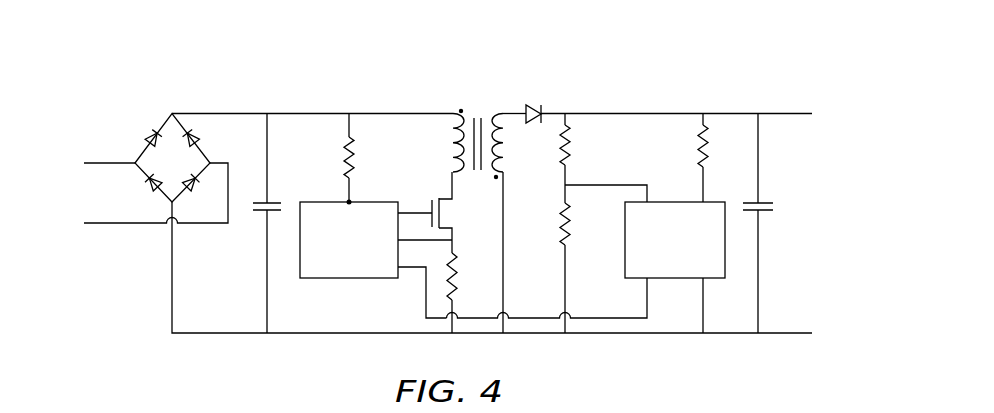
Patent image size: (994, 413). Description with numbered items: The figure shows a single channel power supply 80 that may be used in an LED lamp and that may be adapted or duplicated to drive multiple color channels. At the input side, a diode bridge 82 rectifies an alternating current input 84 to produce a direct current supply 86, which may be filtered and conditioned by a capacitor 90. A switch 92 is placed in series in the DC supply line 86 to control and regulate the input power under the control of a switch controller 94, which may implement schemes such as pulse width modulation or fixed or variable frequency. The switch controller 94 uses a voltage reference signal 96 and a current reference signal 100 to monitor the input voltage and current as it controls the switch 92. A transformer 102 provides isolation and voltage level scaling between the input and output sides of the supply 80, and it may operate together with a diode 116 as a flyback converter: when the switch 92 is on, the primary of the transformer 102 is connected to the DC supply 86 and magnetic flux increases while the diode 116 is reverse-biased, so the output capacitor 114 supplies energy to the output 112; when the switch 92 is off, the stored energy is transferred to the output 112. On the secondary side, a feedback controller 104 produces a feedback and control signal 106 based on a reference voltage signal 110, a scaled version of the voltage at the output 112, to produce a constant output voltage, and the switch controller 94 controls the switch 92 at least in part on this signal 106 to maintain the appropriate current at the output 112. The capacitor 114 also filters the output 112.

The single channel power supply 80 is at (691, 59).
The diode bridge 82 is at (165, 127).
The alternating current (AC) input 84 is at (99, 134).
The direct current (DC) supply 86 is at (306, 113).
The capacitor 90 is at (277, 198).
The switch 92 is at (443, 198).
The switch controller 94 is at (338, 280).
The voltage reference signal 96 is at (352, 192).
The current reference signal 100 is at (437, 240).
The transformer 102 is at (494, 170).
The feedback controller 104 is at (677, 200).
The feedback and control signal 106 is at (653, 317).
The reference voltage signal 110 is at (599, 183).
The output 112 is at (785, 112).
The capacitor 114 is at (765, 200).
The diode 116 is at (535, 105).